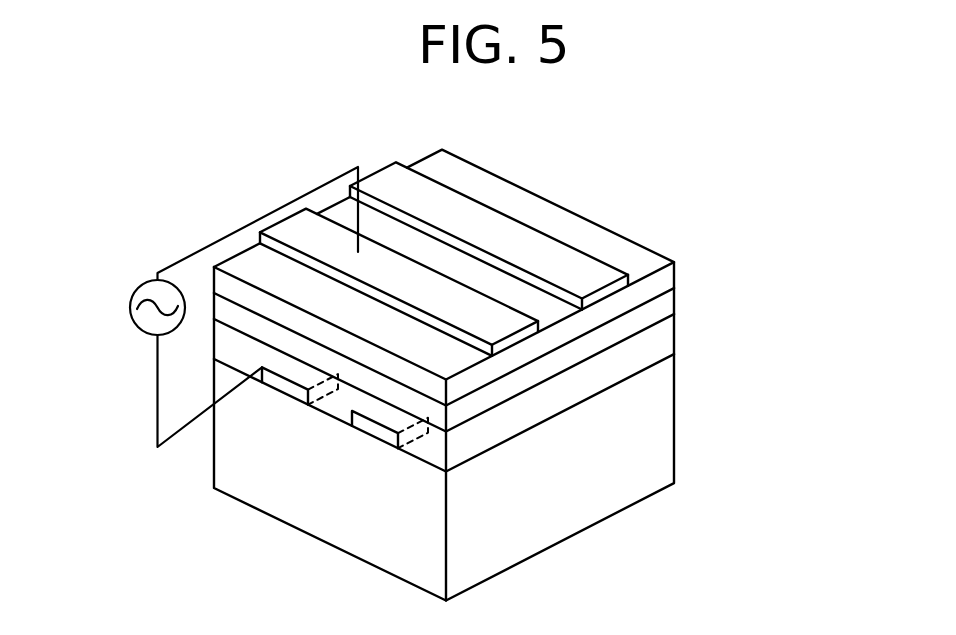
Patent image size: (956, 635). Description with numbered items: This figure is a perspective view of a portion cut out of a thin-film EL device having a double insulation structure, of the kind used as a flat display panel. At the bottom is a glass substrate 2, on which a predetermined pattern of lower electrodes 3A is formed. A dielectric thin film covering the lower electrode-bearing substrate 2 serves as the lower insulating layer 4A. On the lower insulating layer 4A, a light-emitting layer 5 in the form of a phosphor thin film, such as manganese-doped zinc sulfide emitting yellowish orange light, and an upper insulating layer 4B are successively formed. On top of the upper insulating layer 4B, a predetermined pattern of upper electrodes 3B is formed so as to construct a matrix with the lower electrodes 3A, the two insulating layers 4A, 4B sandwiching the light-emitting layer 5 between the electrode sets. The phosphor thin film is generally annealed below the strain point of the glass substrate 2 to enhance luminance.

The glass substrate 2 is at (675, 418).
The lower electrodes 3A is at (366, 428).
The upper electrodes 3B is at (560, 257).
The lower insulating layer 4A is at (675, 335).
The upper insulating layer 4B is at (675, 277).
The light-emitting layer 5 is at (675, 302).